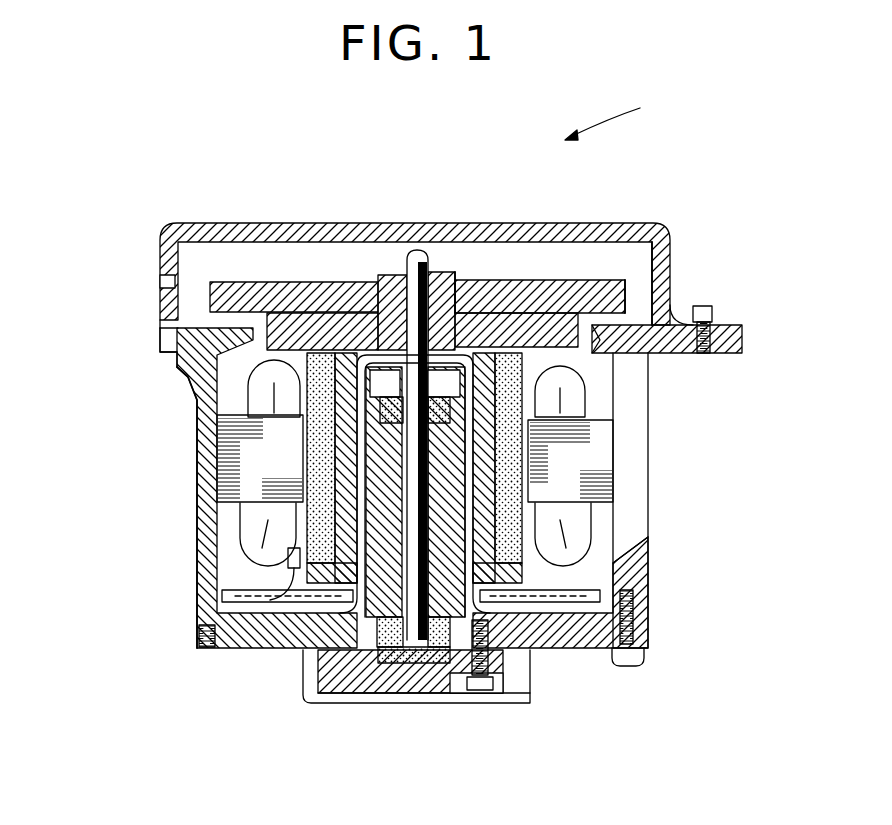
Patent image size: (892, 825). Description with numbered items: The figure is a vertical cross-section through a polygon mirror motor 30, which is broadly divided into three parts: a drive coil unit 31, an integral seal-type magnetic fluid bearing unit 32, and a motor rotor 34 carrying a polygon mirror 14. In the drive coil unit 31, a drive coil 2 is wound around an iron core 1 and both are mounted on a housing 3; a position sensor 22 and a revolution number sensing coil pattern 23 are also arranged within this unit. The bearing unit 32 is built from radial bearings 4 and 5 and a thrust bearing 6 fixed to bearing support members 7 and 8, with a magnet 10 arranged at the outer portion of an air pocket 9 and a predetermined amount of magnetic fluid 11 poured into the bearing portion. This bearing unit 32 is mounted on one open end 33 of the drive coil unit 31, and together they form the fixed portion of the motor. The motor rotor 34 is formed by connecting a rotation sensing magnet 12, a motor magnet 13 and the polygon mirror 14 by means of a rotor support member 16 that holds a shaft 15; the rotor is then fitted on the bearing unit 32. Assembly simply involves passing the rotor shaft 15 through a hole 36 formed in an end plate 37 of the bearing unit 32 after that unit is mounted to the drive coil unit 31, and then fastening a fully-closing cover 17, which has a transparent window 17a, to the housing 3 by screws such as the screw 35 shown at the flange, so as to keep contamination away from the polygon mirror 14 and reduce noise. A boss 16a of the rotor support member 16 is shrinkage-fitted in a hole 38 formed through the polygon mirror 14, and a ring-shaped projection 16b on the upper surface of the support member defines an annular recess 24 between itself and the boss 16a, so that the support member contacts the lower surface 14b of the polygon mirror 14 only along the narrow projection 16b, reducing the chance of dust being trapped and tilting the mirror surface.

The iron core 1 is at (197, 468).
The drive coil 2 is at (248, 398).
The housing 3 is at (215, 583).
The radial bearing 4 is at (325, 283).
The radial bearing 5 is at (540, 648).
The thrust bearing 6 is at (437, 703).
The bearing support member 7 is at (303, 660).
The bearing support member 8 is at (372, 703).
The air pocket 9 is at (622, 280).
The magnet 10 is at (507, 282).
The magnetic fluid 11 is at (668, 262).
The rotation sensing magnet 12 is at (525, 578).
The motor magnet 13 is at (565, 540).
The polygon mirror 14 is at (192, 250).
The lower surface of the polygon mirror 14b is at (640, 262).
The shaft 15 is at (410, 252).
The rotor support member 16 is at (253, 300).
The boss 16a is at (460, 300).
The ring-shaped projection 16b is at (215, 326).
The fully-closing cover 17 is at (432, 243).
The transparent window 17a is at (162, 282).
The position sensor 22 is at (268, 648).
The revolution number sensing coil pattern 23 is at (228, 620).
The annular recess 24 is at (262, 312).
The polygon mirror motor 30 is at (640, 120).
The drive coil unit 31 is at (190, 505).
The integral seal-type magnetic fluid bearing unit 32 is at (450, 470).
The open end 33 is at (200, 642).
The motor rotor 34 is at (610, 392).
The screw 35 is at (706, 306).
The hole 36 is at (448, 352).
The end plate 37 is at (468, 362).
The hole 38 is at (378, 290).